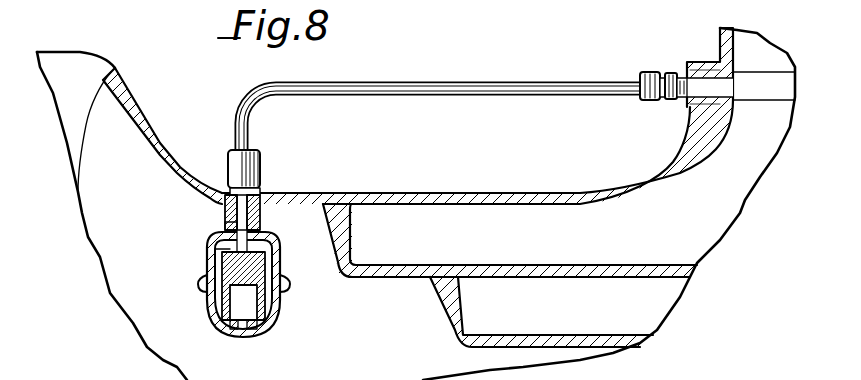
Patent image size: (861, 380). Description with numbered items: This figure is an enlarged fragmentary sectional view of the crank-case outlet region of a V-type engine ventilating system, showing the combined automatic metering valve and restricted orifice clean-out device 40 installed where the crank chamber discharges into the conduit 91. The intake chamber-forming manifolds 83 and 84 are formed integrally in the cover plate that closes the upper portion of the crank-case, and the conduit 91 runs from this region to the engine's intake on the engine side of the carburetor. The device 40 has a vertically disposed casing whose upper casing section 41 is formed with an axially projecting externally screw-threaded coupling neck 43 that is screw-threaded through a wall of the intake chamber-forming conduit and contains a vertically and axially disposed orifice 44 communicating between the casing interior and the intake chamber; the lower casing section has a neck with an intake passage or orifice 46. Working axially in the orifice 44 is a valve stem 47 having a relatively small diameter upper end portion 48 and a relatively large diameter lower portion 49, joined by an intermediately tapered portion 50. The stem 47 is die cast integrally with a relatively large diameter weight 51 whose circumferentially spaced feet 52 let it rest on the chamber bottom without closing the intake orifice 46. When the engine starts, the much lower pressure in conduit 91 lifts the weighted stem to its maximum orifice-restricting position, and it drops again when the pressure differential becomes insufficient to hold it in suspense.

The combined automatic metering valve and restricted orifice clean-out device 40 is at (283, 270).
The upper casing section 41 is at (280, 259).
The coupling neck 43 is at (261, 218).
The orifice 44 is at (227, 177).
The intake passage or orifice 46 is at (244, 332).
The valve stem 47 is at (262, 193).
The small diameter upper end portion 48 is at (225, 227).
The large diameter lower portion 49 is at (272, 241).
The tapered portion 50 is at (216, 253).
The weight 51 is at (230, 265).
The feet 52 is at (226, 331).
The intake chamber-forming manifold 83 is at (472, 212).
The intake chamber-forming manifold 84 is at (555, 306).
The conduit 91 is at (471, 82).